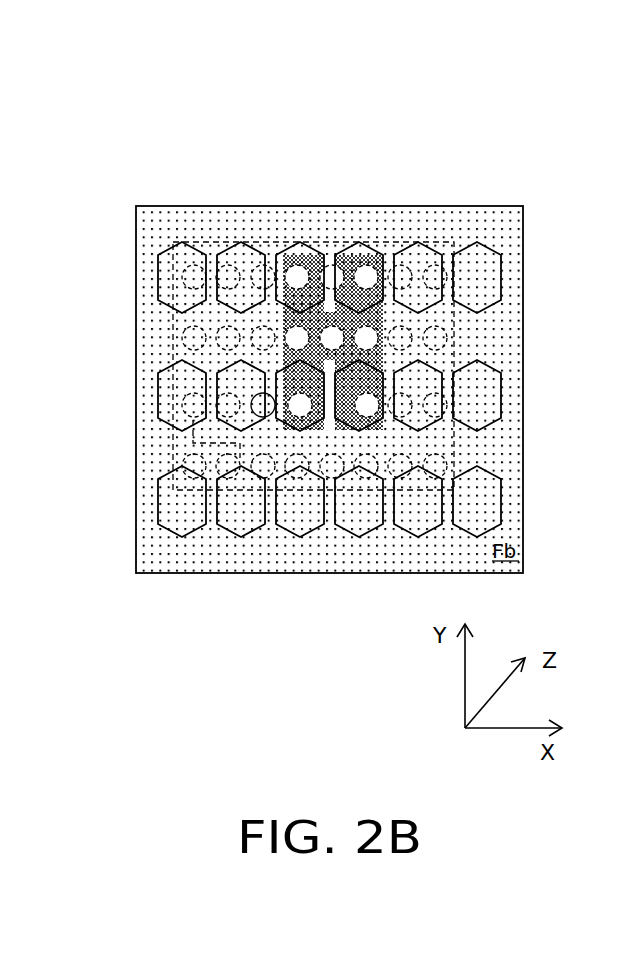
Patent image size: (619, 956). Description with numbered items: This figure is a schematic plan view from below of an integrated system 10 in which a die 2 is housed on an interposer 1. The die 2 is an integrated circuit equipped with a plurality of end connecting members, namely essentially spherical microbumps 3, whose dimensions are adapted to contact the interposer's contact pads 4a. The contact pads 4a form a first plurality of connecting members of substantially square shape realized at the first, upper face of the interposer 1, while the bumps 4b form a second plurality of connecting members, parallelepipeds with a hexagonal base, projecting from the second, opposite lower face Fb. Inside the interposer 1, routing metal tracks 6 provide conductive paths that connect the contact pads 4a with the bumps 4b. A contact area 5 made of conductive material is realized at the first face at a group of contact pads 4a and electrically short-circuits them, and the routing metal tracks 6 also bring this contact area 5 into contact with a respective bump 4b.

The integrated system 10 is at (476, 131).
The interposer 1 is at (514, 262).
The die 2 is at (203, 241).
The microbumps 3 is at (222, 347).
The contact pads 4a is at (299, 269).
The bumps 4b is at (356, 540).
The contact area 5 is at (271, 265).
The routing metal tracks 6 is at (222, 447).